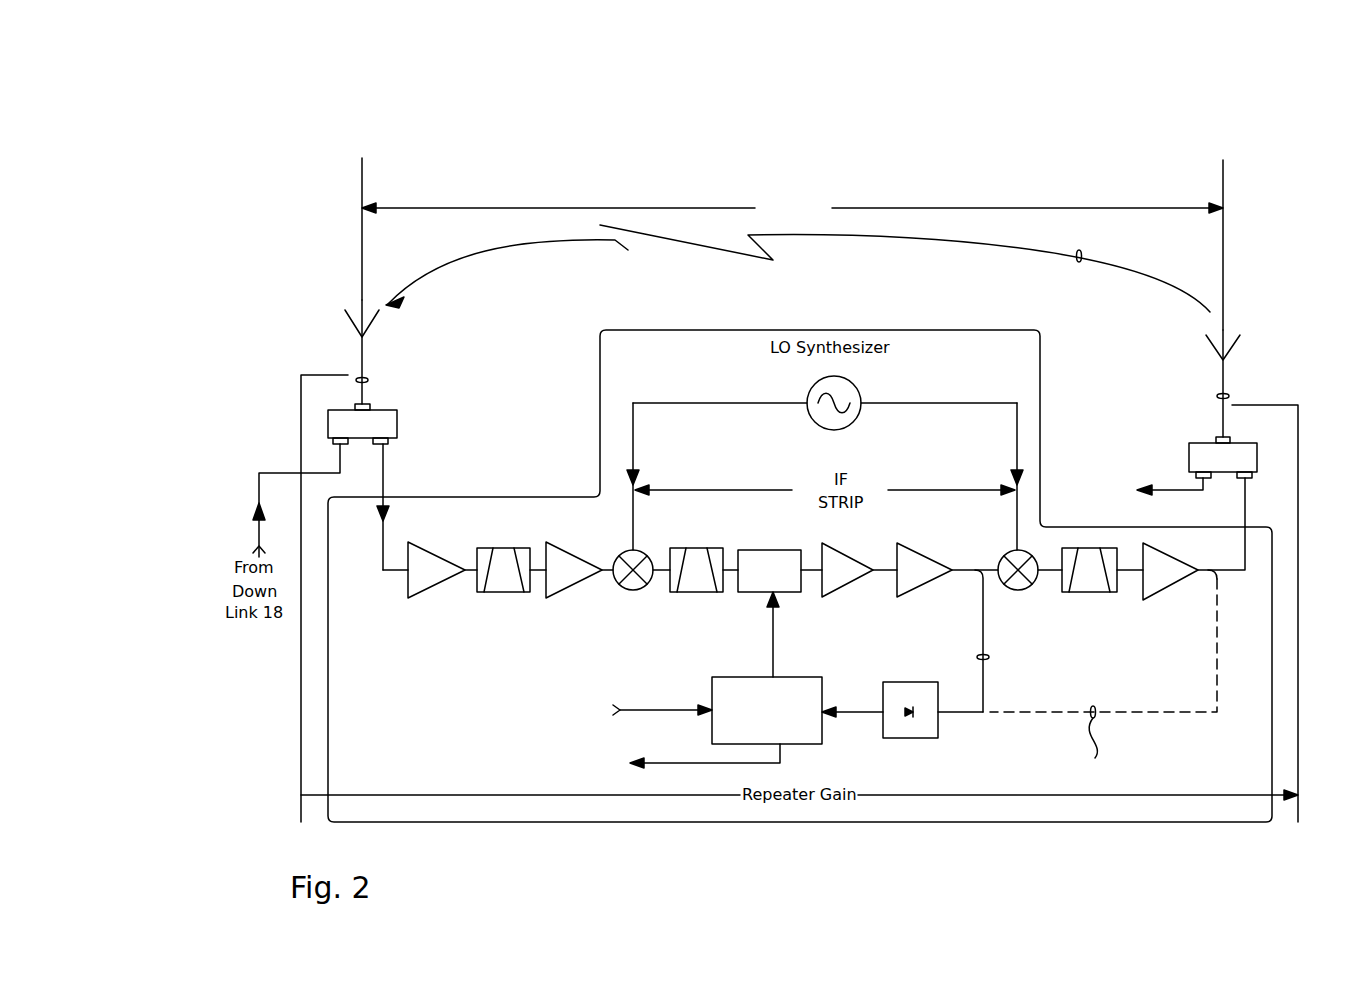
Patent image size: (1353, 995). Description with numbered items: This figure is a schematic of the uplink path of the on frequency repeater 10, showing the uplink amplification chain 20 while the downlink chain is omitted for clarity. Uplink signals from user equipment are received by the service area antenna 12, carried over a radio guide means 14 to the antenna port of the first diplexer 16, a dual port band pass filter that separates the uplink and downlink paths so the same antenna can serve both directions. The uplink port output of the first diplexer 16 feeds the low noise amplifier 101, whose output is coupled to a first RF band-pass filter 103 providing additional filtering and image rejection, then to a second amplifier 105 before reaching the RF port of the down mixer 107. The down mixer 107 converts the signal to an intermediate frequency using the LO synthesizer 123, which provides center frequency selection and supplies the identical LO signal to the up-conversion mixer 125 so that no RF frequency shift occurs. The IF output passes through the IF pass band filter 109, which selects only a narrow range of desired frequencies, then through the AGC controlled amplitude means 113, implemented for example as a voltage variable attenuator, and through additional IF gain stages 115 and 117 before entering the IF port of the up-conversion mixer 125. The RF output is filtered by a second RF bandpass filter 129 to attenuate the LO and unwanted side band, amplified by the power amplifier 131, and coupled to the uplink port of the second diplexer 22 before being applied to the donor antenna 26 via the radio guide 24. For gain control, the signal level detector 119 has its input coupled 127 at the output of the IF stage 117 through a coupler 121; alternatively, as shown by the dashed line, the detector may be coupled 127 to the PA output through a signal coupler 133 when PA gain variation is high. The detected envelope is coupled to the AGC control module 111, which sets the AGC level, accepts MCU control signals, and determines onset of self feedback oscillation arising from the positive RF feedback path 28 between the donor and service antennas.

The on frequency repeater 10 is at (901, 194).
The service area antenna 12 is at (345, 303).
The radio guide means 14 is at (372, 379).
The first diplexer 16 is at (397, 423).
The uplink amplification chain 20 is at (1043, 377).
The second diplexer 22 is at (1190, 443).
The radio guide 24 is at (1230, 396).
The donor antenna 26 is at (1243, 332).
The positive RF feedback path 28 is at (1077, 262).
The low noise amplifier 101 is at (404, 594).
The first RF band-pass filter 103 is at (507, 593).
The second amplifier 105 is at (565, 593).
The down mixer 107 is at (633, 593).
The IF pass band filter 109 is at (697, 595).
The AGC control module 111 is at (753, 676).
The AGC controlled amplitude means 113 is at (760, 549).
The IF gain stage 115 is at (837, 595).
The IF gain stage 117 is at (908, 595).
The signal level detector 119 is at (915, 682).
The coupler 121 is at (976, 566).
The LO synthesizer 123 is at (858, 417).
The up-conversion mixer 125 is at (1012, 597).
The detector input coupling 127 is at (992, 660).
The second RF bandpass filter 129 is at (1088, 593).
The power amplifier 131 is at (1160, 597).
The signal coupler 133 is at (1208, 578).